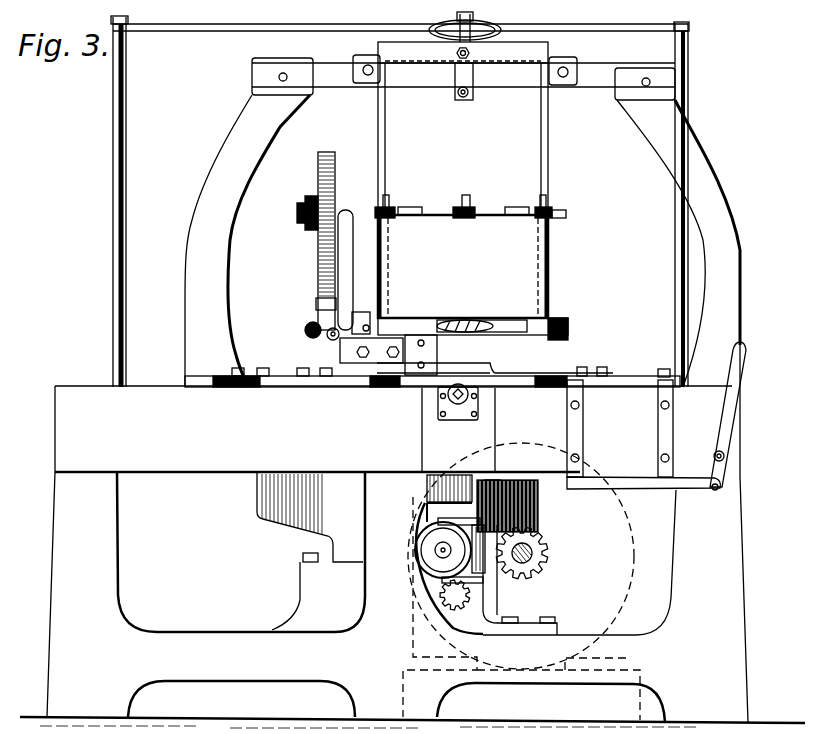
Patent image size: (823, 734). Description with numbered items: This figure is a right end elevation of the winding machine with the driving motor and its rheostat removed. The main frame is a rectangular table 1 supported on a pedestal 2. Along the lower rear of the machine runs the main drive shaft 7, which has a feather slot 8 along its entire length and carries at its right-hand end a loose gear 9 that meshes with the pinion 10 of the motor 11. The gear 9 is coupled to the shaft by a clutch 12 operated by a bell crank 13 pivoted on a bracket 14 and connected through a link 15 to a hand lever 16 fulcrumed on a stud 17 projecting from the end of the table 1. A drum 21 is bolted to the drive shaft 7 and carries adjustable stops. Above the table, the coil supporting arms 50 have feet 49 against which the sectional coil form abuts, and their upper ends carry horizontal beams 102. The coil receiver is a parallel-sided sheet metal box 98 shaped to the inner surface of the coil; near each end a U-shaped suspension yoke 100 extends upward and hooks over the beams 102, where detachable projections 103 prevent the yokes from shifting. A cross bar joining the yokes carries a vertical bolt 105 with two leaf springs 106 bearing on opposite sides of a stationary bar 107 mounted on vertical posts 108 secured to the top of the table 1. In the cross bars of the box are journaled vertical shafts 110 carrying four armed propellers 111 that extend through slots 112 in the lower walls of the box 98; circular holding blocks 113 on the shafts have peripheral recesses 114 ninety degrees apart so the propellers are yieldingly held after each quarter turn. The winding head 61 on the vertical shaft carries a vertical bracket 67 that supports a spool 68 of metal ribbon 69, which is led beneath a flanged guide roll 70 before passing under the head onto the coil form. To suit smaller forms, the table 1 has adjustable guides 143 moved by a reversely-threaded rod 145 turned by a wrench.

The rectangular table 1 is at (191, 467).
The pedestal 2 is at (116, 548).
The main drive shaft 7 is at (423, 568).
The feather slot 8 is at (440, 550).
The loose gear 9 is at (455, 597).
The pinion 10 is at (548, 555).
The motor 11 is at (631, 608).
The clutch 12 is at (422, 541).
The bell crank 13 is at (470, 473).
The bracket 14 is at (493, 605).
The link 15 is at (652, 487).
The hand lever 16 is at (725, 413).
The stud 17 is at (714, 455).
The drum 21 is at (540, 507).
The feet 49 is at (193, 378).
The coil supporting arms 50 is at (200, 198).
The winding head 61 is at (342, 352).
The vertical bracket 67 is at (345, 283).
The spool 68 is at (318, 202).
The metal ribbon 69 is at (320, 305).
The flanged guide roll 70 is at (312, 330).
The box 98 is at (473, 275).
The U-shaped suspension yoke 100 is at (428, 55).
The horizontal beams 102 is at (497, 82).
The detachable projections 103 is at (360, 62).
The vertical bolt 105 is at (455, 21).
The leaf springs 106 is at (497, 23).
The stationary bar 107 is at (248, 25).
The vertical posts 108 is at (115, 192).
The vertical shafts 110 is at (385, 198).
The four armed propellers 111 is at (445, 320).
The slots 112 is at (478, 333).
The circular holding blocks 113 is at (377, 210).
The peripheral recesses 114 is at (387, 213).
The adjustable guides 143 is at (325, 382).
The reversely-threaded rod 145 is at (450, 397).